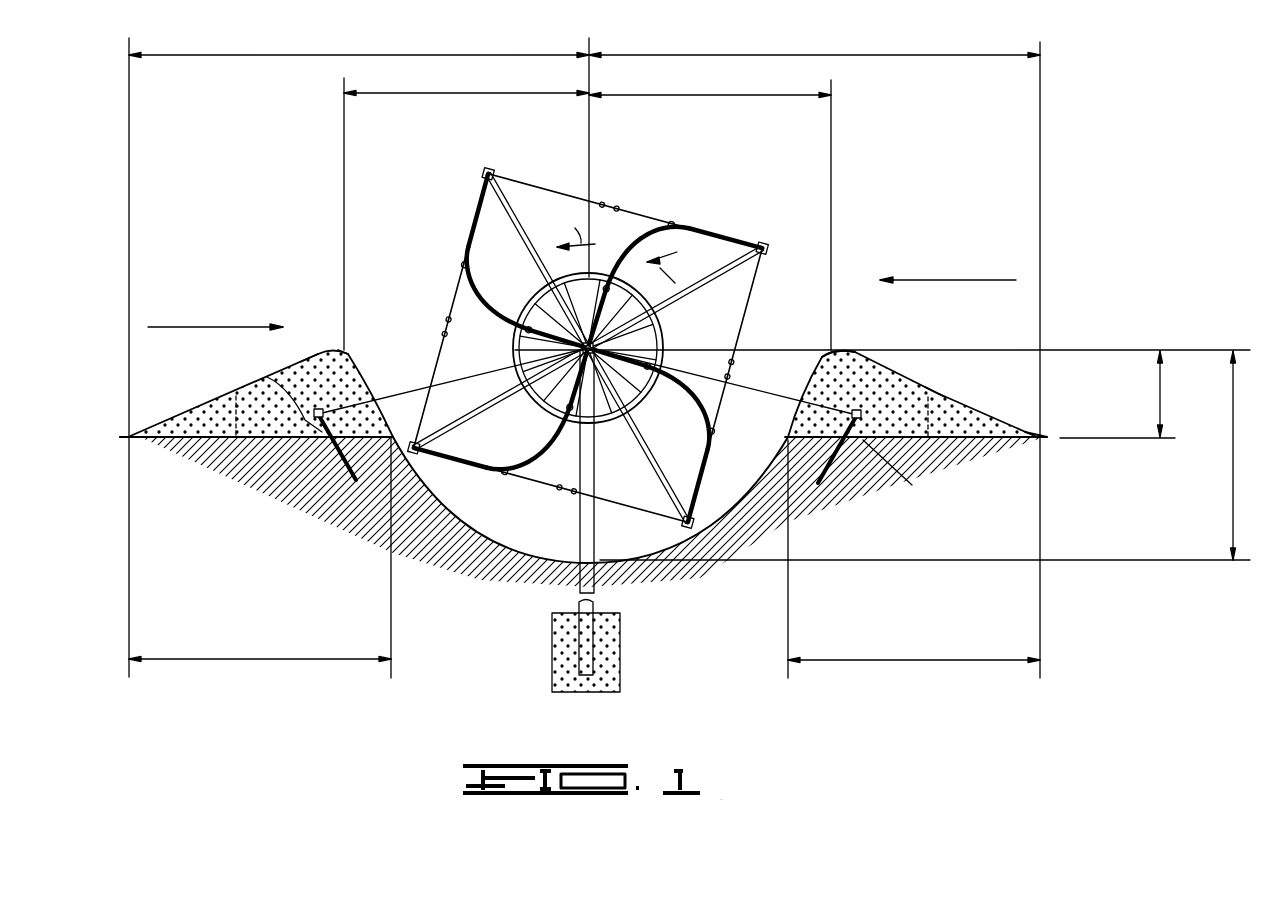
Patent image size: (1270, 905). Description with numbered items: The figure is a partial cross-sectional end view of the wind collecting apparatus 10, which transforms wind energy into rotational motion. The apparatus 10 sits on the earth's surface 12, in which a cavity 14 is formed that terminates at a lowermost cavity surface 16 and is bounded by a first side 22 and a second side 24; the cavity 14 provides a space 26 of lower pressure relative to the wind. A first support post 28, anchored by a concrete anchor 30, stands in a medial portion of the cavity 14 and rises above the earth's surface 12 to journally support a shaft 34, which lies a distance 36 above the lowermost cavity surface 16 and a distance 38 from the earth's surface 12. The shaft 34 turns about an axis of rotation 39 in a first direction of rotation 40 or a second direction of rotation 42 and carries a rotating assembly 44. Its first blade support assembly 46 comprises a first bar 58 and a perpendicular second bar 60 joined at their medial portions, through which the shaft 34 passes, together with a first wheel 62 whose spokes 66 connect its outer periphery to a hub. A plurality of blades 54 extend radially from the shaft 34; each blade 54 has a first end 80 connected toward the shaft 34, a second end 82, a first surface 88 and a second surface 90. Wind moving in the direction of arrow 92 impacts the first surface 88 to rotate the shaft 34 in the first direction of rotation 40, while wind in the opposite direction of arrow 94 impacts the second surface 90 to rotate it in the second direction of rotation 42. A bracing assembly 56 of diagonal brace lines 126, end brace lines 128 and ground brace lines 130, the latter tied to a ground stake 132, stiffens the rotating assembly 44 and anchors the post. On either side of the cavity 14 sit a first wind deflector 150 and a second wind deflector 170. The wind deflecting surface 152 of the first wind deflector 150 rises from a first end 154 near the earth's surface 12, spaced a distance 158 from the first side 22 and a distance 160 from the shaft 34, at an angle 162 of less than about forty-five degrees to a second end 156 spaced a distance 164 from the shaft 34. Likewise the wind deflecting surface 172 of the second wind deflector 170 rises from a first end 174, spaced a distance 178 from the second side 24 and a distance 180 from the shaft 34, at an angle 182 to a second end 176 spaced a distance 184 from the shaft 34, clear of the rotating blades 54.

The wind collecting apparatus 10 is at (642, 147).
The earth's surface 12 is at (958, 438).
The cavity 14 is at (269, 513).
The lowermost cavity surface 16 is at (609, 552).
The first side 22 is at (770, 493).
The second side 24 is at (383, 531).
The space 26 is at (586, 516).
The first support post 28 is at (585, 503).
The concrete anchor 30 is at (627, 668).
The shaft 34 is at (656, 340).
The distance 36 is at (1232, 489).
The distance 38 is at (1163, 402).
The axis of rotation 39 is at (520, 338).
The first direction of rotation 40 is at (569, 230).
The second direction of rotation 42 is at (673, 263).
The rotating assembly 44 is at (405, 298).
The first blade support assembly 46 is at (779, 379).
The blades 54 is at (572, 322).
The bracing assembly 56 is at (535, 424).
The first bar 58 is at (543, 243).
The second bar 60 is at (675, 298).
The first wheel 62 is at (515, 351).
The spokes 66 is at (501, 398).
The first end 80 is at (572, 347).
The second end 82 is at (593, 359).
The first surface 88 is at (616, 323).
The second surface 90 is at (567, 327).
The directional arrow 92 is at (946, 282).
The directional arrow 94 is at (215, 332).
The diagonal brace lines 126 is at (590, 344).
The end brace lines 128 is at (599, 340).
The ground brace lines 130 is at (383, 393).
The ground stake 132 is at (267, 377).
The first wind deflector 150 is at (915, 368).
The wind deflecting surface 152 is at (937, 393).
The first end 154 is at (1040, 435).
The second end 156 is at (837, 347).
The distance 158 is at (934, 661).
The distance 160 is at (805, 56).
The angle 162 is at (940, 410).
The distance 164 is at (697, 94).
The second wind deflector 170 is at (292, 364).
The wind deflecting surface 172 is at (317, 350).
The first end 174 is at (127, 434).
The second end 176 is at (337, 343).
The distance 178 is at (276, 657).
The distance 180 is at (371, 55).
The angle 182 is at (236, 394).
The distance 184 is at (492, 94).